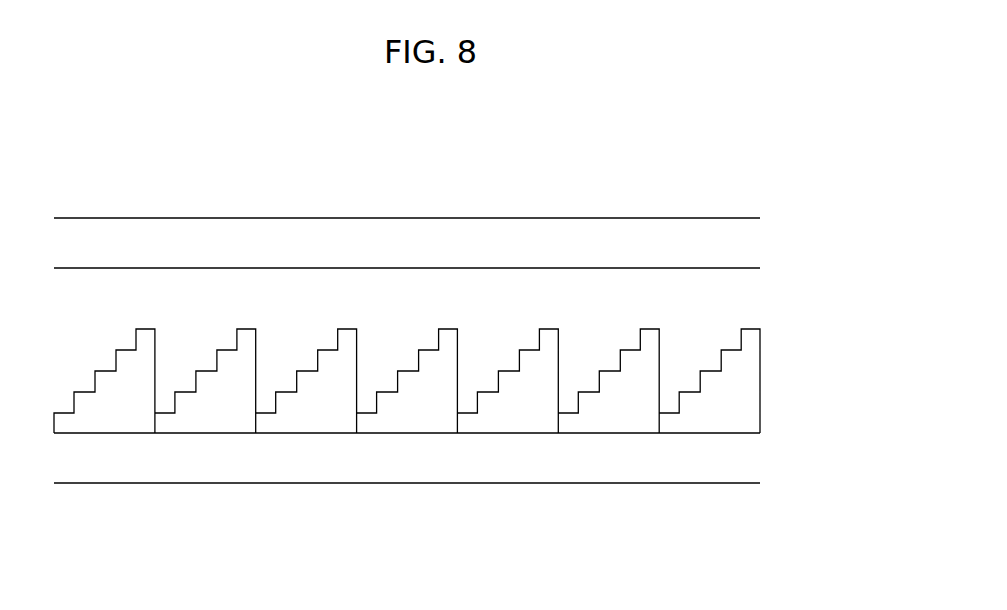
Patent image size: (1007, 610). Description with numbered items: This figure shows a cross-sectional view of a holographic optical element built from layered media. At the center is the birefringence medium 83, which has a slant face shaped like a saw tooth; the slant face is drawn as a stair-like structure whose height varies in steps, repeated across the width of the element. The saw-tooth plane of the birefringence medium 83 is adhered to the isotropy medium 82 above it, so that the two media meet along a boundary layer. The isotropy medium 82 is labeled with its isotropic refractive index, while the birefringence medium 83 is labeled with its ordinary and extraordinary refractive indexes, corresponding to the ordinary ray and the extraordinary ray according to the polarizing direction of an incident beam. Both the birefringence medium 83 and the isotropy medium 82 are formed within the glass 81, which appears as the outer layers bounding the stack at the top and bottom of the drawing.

The glass 81 is at (553, 237).
The isotropy medium 82 is at (677, 305).
The birefringence medium 83 is at (730, 403).